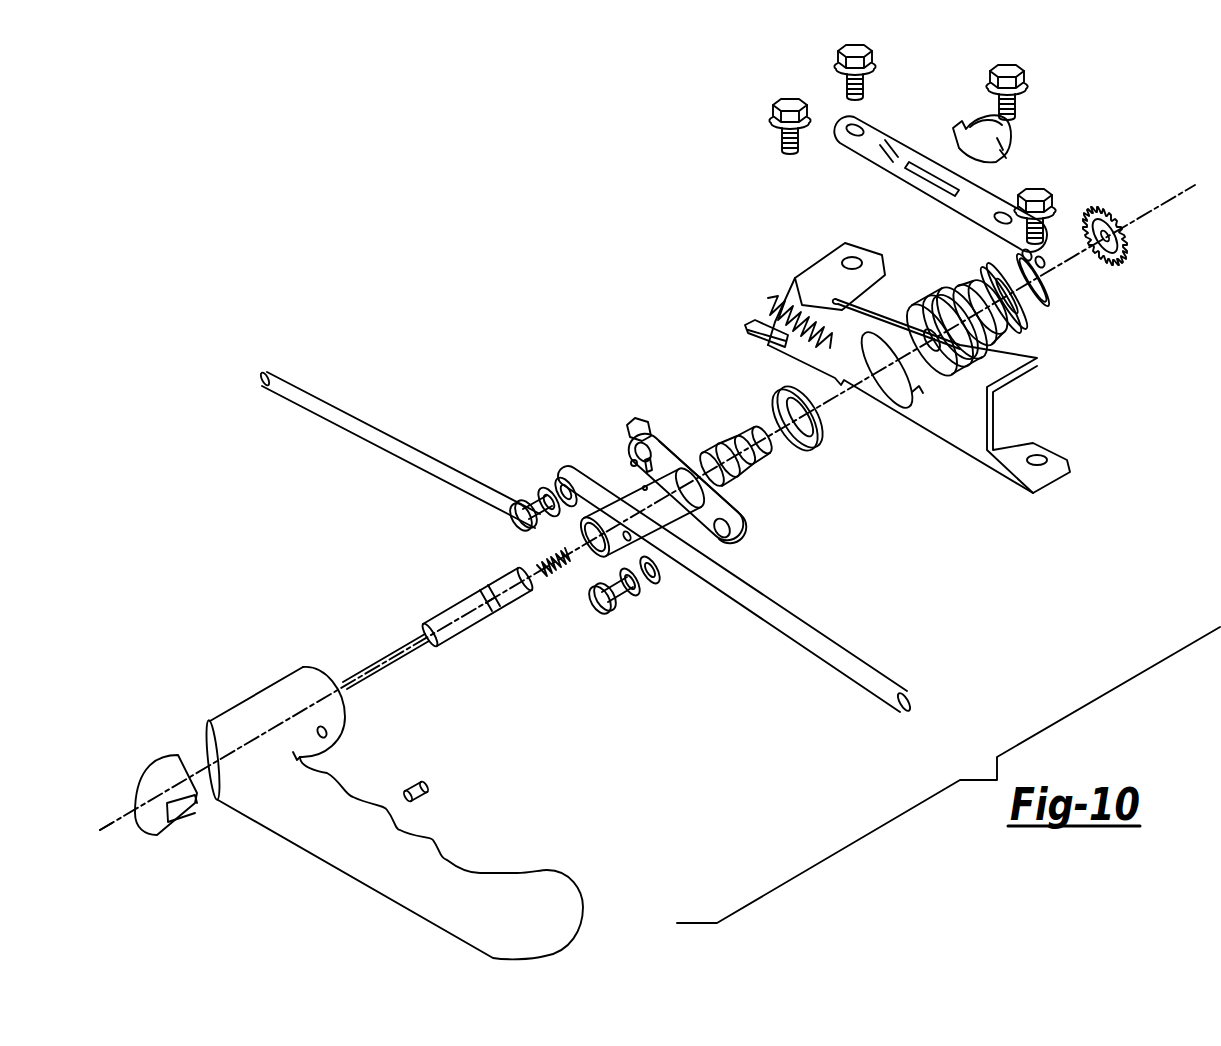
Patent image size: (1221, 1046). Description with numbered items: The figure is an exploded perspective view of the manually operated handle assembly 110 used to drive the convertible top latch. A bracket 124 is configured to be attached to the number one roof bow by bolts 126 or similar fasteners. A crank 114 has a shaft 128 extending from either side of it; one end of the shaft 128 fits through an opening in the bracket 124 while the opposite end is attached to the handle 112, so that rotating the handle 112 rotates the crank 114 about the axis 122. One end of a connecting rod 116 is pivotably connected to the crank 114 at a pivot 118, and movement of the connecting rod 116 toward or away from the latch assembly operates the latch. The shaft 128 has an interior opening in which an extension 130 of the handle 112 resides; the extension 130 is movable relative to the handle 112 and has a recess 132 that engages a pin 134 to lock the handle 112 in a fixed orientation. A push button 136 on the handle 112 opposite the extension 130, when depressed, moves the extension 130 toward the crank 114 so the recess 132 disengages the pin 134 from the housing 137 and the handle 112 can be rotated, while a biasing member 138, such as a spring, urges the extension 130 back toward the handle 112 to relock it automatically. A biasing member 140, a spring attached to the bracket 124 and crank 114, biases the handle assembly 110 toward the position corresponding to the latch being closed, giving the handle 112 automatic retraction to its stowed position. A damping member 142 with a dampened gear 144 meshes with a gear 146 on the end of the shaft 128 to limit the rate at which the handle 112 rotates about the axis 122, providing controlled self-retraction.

The handle assembly 110 is at (575, 247).
The handle 112 is at (363, 867).
The crank 114 is at (733, 510).
The connecting rod 116 is at (407, 450).
The pivot 118 is at (513, 523).
The axis 122 is at (123, 843).
The bracket 124 is at (957, 433).
The bolts 126 is at (773, 143).
The shaft 128 is at (702, 453).
The extension 130 is at (507, 603).
The recess 132 is at (483, 597).
The pin 134 is at (627, 423).
The push button 136 is at (163, 773).
The housing 137 is at (940, 287).
The biasing member 138 is at (557, 580).
The biasing member 140 is at (763, 313).
The damping member 142 is at (1034, 108).
The dampened gear 144 is at (1013, 137).
The gear 146 is at (1117, 270).